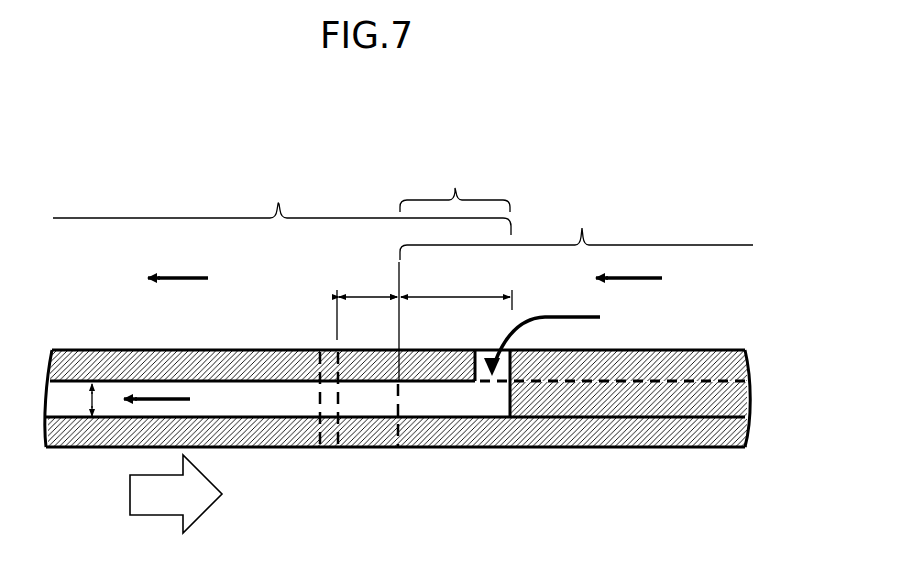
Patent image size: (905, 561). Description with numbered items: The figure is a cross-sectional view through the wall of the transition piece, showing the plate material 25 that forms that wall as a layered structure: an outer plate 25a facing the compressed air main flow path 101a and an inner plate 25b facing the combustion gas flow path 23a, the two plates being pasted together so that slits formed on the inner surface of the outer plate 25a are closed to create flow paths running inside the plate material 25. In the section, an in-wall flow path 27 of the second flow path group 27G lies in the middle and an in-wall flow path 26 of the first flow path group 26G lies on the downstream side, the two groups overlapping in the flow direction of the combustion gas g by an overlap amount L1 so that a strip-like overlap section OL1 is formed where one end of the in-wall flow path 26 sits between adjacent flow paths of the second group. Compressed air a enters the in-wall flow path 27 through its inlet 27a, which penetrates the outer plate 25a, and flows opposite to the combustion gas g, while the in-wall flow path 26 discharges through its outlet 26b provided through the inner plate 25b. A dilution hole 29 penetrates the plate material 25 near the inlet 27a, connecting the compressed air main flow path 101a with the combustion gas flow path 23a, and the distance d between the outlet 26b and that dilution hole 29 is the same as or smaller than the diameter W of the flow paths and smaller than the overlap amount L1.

The plate material 25 is at (815, 383).
The outer plate 25a is at (746, 385).
The inner plate 25b is at (745, 438).
The compressed air main flow path 101a is at (398, 328).
The combustion gas flow path 23a is at (395, 471).
The in-wall flow path 27 is at (395, 399).
The in-wall flow path 26 is at (628, 383).
The inlet 27a is at (489, 347).
The dilution hole 29 is at (332, 428).
The outlet 26b is at (437, 428).
The second flow path group 27G is at (282, 203).
The overlap section OL1 is at (455, 184).
The first flow path group 26G is at (576, 229).
The distance d is at (368, 321).
The overlap amount L1 is at (456, 289).
The diameter W is at (75, 400).
The compressed air a is at (402, 340).
The combustion gas g is at (176, 494).